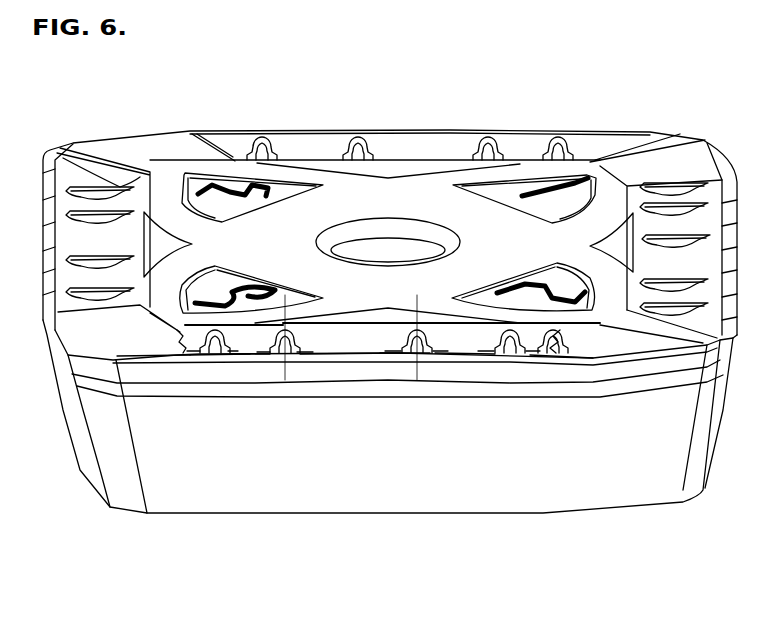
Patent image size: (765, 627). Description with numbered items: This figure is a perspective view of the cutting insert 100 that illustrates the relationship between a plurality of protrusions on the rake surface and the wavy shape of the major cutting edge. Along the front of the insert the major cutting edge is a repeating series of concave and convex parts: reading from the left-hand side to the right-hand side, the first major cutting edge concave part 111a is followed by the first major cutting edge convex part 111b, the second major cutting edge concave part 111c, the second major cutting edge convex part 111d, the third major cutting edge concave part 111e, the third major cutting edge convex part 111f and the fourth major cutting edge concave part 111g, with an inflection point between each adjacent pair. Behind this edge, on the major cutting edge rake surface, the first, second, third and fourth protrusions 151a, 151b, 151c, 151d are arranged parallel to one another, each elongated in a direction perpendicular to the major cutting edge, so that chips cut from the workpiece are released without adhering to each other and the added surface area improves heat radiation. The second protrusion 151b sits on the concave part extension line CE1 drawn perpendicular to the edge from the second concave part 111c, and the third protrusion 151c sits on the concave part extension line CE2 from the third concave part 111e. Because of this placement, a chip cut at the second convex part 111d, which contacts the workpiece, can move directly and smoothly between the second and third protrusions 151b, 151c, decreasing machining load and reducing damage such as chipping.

The cutting insert 100 is at (693, 97).
The first major cutting edge concave part 111a is at (183, 351).
The first major cutting edge convex part 111b is at (208, 357).
The second major cutting edge concave part 111c is at (258, 362).
The second major cutting edge convex part 111d is at (352, 358).
The third major cutting edge concave part 111e is at (415, 363).
The third major cutting edge convex part 111f is at (493, 363).
The fourth major cutting edge concave part 111g is at (562, 330).
The first protrusion 151a is at (180, 355).
The second protrusion 151b is at (292, 357).
The third protrusion 151c is at (430, 352).
The fourth protrusion 151d is at (517, 349).
The concave part extension line CE1 is at (284, 366).
The concave part extension line CE2 is at (422, 352).